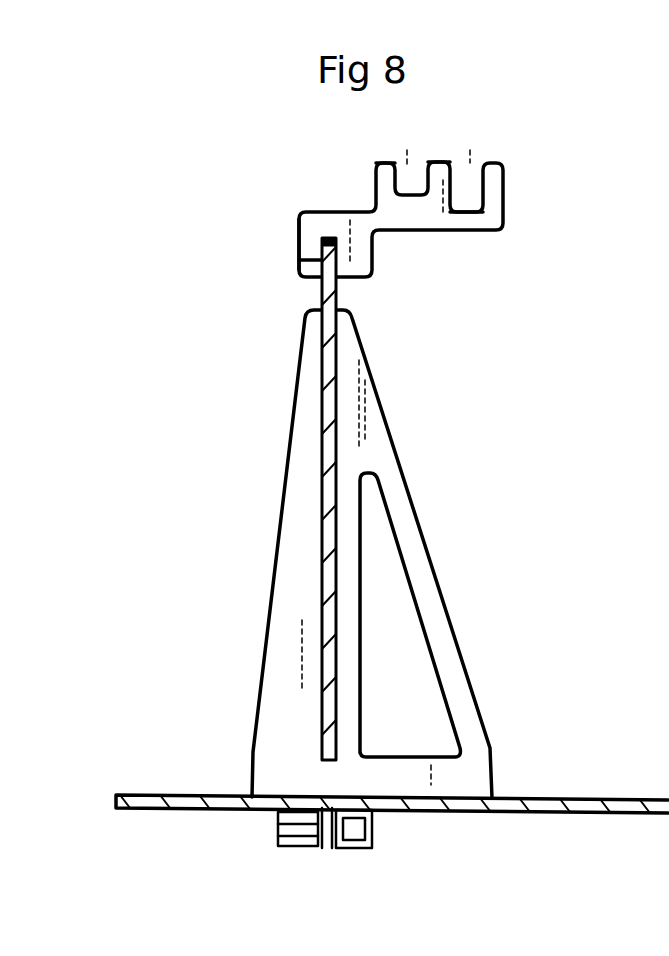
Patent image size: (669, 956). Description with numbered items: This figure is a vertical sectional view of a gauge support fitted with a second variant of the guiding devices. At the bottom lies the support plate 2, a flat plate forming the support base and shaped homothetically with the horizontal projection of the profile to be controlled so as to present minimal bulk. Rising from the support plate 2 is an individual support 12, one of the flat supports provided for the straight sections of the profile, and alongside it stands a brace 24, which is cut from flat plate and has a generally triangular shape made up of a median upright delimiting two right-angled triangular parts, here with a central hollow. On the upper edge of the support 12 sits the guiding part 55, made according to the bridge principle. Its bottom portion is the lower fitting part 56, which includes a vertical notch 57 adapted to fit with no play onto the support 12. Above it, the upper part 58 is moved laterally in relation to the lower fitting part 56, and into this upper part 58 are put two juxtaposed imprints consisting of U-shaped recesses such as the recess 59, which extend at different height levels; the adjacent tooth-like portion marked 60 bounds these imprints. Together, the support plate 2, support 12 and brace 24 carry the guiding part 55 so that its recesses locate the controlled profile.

The support plate 2 is at (192, 808).
The support 12 is at (328, 408).
The brace 24 is at (273, 593).
The guiding part 55 is at (410, 257).
The lower fitting part 56 is at (302, 228).
The vertical notch 57 is at (299, 260).
The upper part 58 is at (497, 212).
The recess 59 is at (408, 165).
The second tooth 60 is at (468, 163).